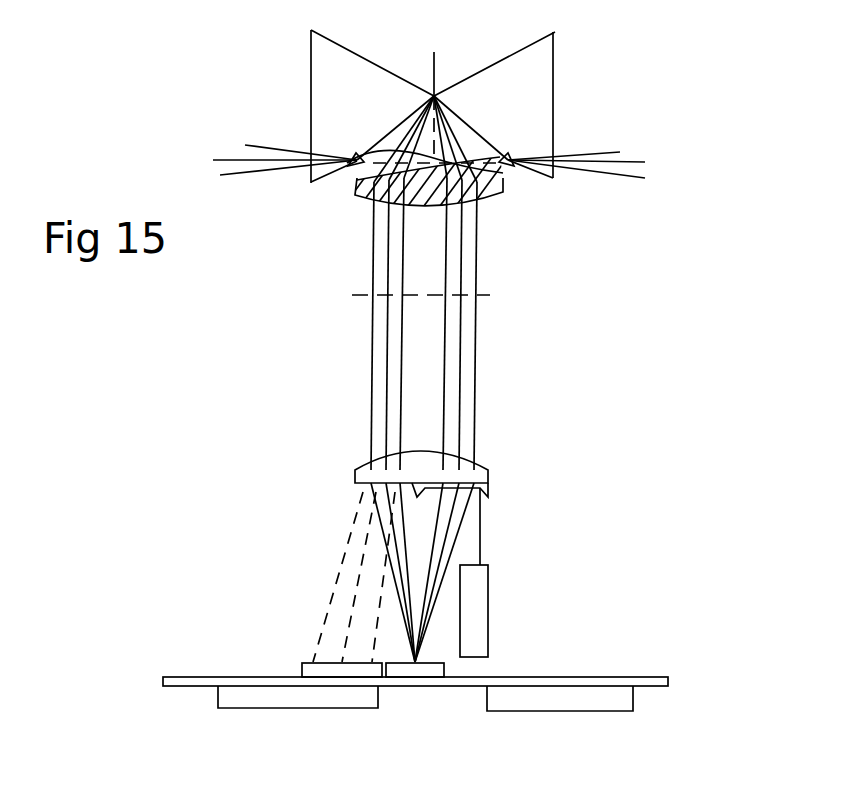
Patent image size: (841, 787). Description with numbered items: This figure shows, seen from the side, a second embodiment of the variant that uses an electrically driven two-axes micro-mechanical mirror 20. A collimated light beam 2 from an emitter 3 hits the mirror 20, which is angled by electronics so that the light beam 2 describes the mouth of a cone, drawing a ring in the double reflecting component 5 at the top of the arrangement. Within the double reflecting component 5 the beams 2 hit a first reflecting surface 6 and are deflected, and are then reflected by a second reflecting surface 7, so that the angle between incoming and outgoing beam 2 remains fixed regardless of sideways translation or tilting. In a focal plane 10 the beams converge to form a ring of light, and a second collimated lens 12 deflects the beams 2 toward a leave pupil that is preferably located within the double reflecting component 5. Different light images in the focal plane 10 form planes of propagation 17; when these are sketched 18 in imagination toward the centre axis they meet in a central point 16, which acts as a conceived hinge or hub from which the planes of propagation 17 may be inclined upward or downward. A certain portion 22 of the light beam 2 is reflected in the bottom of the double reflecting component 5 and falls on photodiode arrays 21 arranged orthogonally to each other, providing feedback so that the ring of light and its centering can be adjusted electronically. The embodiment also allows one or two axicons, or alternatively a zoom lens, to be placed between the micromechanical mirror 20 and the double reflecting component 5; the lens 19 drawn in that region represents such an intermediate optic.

The double reflecting component 5 is at (537, 67).
The first reflecting surface 6 is at (462, 80).
The planes of propagation 17 is at (640, 158).
The sketched planes 18 is at (312, 183).
The second reflecting surface 7 is at (530, 176).
The second collimated lens 12 is at (358, 182).
The central point 16 is at (410, 219).
The focal plane 10 is at (490, 296).
The lens 19 is at (490, 485).
The light beam 2 is at (452, 550).
The emitter 3 is at (500, 578).
The reflected portion of the light beam 22 is at (352, 533).
The photodiode arrays 21 is at (313, 663).
The two-axes micromechanical mirror 20 is at (437, 663).